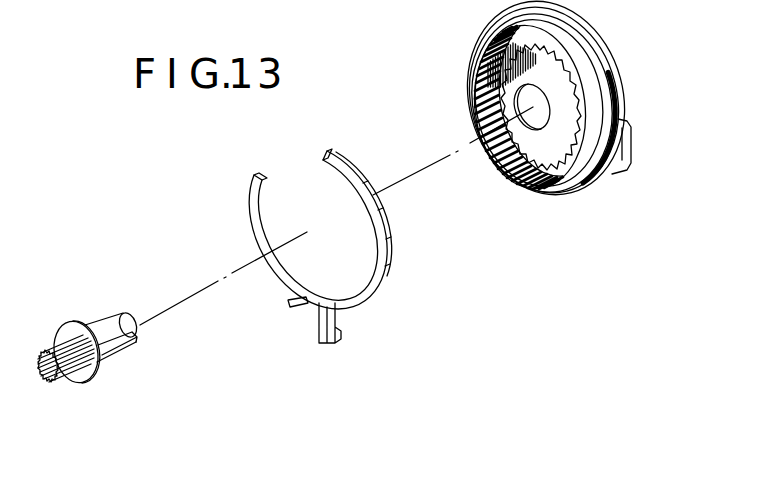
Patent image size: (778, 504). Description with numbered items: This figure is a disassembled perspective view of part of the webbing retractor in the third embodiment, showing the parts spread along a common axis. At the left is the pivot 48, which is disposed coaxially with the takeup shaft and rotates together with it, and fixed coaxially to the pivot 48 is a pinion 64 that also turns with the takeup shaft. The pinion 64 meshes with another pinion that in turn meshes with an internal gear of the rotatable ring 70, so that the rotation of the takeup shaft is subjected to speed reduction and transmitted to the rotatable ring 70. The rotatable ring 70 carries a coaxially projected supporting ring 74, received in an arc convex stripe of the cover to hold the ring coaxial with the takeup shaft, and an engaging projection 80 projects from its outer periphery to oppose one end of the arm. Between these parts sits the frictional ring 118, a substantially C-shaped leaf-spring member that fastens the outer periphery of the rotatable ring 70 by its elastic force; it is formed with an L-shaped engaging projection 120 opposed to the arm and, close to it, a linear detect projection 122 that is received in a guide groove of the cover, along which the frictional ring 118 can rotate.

The pivot 48 is at (108, 327).
The pinion 64 is at (53, 374).
The rotatable ring 70 is at (602, 58).
The supporting ring 74 is at (587, 186).
The engaging projection 80 is at (632, 162).
The frictional ring 118 is at (377, 248).
The engaging projection 120 is at (323, 329).
The detect projection 122 is at (292, 300).